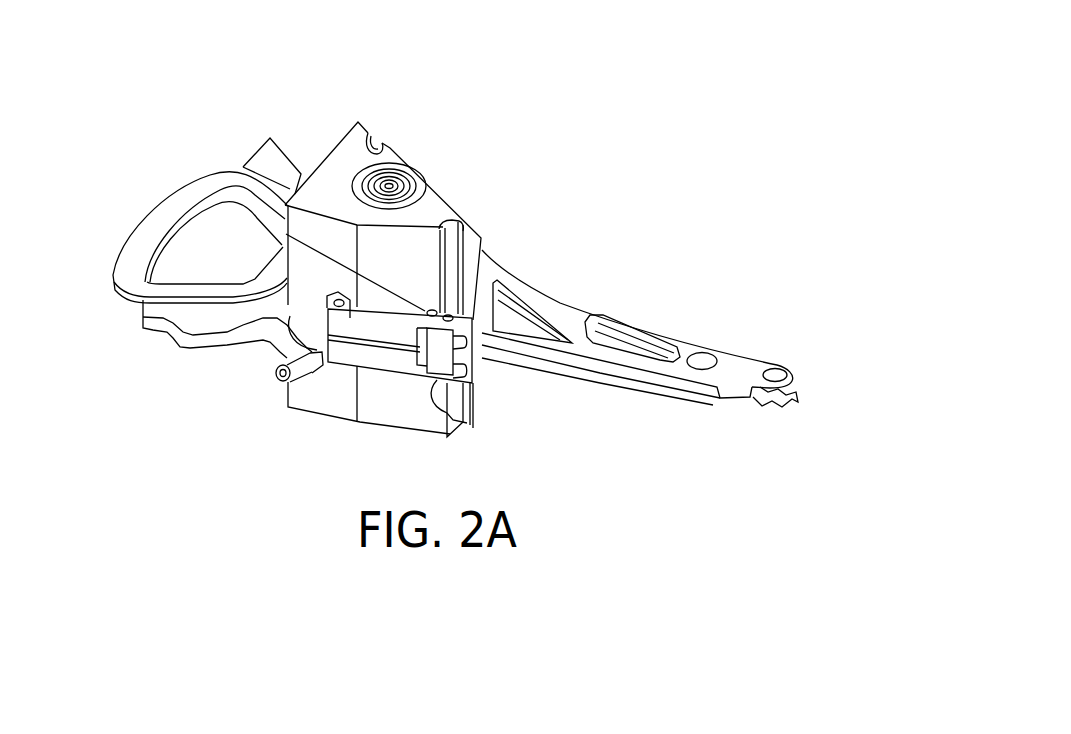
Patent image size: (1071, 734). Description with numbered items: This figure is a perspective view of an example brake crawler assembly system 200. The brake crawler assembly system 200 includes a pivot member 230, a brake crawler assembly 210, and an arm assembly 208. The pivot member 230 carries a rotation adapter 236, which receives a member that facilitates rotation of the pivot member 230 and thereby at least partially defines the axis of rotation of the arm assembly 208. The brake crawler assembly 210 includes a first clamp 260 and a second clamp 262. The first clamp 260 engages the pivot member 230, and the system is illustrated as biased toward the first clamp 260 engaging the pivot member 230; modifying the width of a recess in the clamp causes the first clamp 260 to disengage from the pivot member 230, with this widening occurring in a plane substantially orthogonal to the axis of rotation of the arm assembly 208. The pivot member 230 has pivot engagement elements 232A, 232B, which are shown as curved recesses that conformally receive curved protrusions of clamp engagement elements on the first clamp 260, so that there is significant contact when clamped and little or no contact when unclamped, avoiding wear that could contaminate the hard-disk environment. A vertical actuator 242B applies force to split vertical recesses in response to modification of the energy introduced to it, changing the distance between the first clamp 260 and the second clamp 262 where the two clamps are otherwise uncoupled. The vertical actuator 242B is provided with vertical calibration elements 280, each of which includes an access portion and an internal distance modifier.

The brake crawler assembly system 200 is at (216, 118).
The arm assembly 208 is at (508, 274).
The brake crawler assembly 210 is at (483, 240).
The pivot member 230 is at (427, 208).
The pivot engagement element 232A is at (388, 145).
The pivot engagement element 232B is at (472, 249).
The rotation adapter 236 is at (422, 186).
The vertical actuator 242B is at (463, 417).
The first clamp 260 is at (383, 328).
The second clamp 262 is at (403, 355).
The vertical calibration element 280 is at (288, 234).